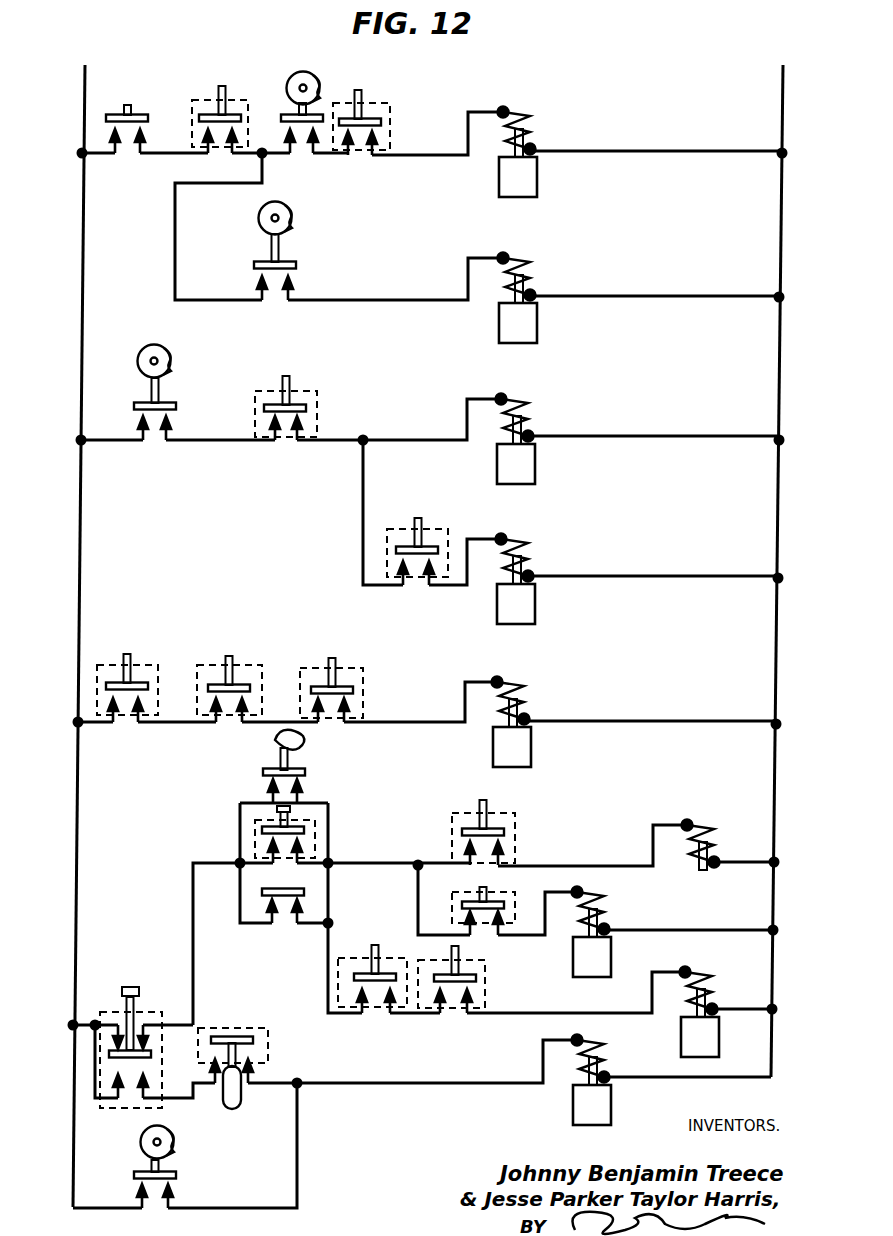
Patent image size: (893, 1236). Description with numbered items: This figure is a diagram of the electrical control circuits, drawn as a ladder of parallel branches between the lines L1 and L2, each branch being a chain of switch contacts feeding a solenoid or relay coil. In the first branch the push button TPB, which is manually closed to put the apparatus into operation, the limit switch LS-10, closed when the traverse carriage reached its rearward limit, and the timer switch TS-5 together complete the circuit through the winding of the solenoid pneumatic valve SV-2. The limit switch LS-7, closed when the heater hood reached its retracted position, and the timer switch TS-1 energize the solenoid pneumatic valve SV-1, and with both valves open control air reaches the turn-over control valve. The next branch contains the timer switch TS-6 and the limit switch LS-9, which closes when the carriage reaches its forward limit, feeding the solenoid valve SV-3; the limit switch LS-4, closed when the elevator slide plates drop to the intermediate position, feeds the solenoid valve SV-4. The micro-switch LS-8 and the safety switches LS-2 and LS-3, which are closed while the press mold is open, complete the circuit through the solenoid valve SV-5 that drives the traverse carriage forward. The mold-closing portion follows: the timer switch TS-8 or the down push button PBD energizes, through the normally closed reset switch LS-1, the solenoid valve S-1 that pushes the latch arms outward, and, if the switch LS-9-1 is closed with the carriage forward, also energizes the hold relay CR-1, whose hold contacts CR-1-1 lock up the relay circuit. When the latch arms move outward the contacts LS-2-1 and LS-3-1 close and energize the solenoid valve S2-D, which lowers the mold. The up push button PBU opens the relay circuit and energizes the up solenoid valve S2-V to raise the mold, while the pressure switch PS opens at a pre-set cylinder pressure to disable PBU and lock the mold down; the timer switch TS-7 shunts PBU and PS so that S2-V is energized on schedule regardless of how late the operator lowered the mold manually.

The power supply line L1 is at (84, 72).
The power supply line L2 is at (802, 550).
The push button TPB is at (122, 104).
The limit switch LS-10 is at (212, 100).
The timer switch TS-1 is at (291, 74).
The limit switch LS-7 is at (378, 100).
The solenoid pneumatic valve SV-1 is at (530, 178).
The timer switch TS-5 is at (292, 214).
The solenoid pneumatic valve SV-2 is at (530, 323).
The timer switch TS-6 is at (165, 350).
The limit switch LS-9 is at (300, 388).
The solenoid valve SV-3 is at (528, 462).
The limit switch LS-4 is at (392, 538).
The solenoid valve SV-4 is at (528, 602).
The micro-switch LS-8 is at (113, 672).
The safety switch LS-2 is at (216, 674).
The safety switch LS-3 is at (320, 672).
The solenoid valve SV-5 is at (525, 744).
The timer switch TS-8 is at (275, 744).
The down push button PBD is at (318, 839).
The hold contacts CR-1-1 is at (285, 899).
The switch LS-9-1 is at (505, 823).
The hold relay CR-1 is at (692, 846).
The reset switch LS-1 is at (455, 908).
The solenoid valve S-1 is at (571, 958).
The contacts LS-2-1 is at (352, 960).
The contacts LS-3-1 is at (484, 994).
The solenoid valve S2-D is at (682, 1040).
The up push button PBU is at (108, 1018).
The pressure switch PS is at (263, 1028).
The up solenoid valve S2-V is at (570, 1112).
The timer switch TS-7 is at (173, 1138).